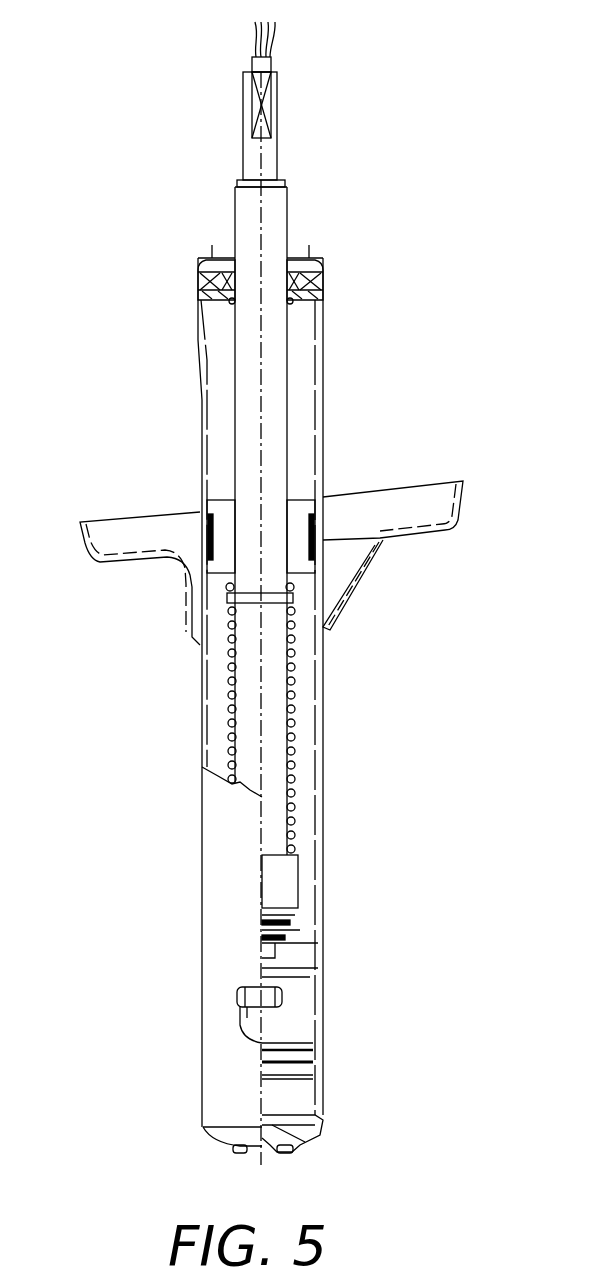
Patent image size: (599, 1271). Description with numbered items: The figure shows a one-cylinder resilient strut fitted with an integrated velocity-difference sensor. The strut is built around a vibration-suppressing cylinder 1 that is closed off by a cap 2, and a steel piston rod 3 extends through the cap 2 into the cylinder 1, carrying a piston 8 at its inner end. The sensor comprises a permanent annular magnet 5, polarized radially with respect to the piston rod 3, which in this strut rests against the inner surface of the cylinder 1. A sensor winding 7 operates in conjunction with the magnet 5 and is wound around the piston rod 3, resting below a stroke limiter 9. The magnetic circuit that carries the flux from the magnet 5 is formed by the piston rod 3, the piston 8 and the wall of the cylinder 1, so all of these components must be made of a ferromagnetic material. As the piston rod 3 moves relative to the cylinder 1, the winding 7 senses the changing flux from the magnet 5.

The vibration-suppressing cylinder 1 is at (323, 397).
The cap 2 is at (323, 286).
The piston rod 3 is at (248, 359).
The permanent annular magnet 5 is at (197, 547).
The sensor winding 7 is at (232, 720).
The piston 8 is at (297, 960).
The stroke limiter 9 is at (296, 596).